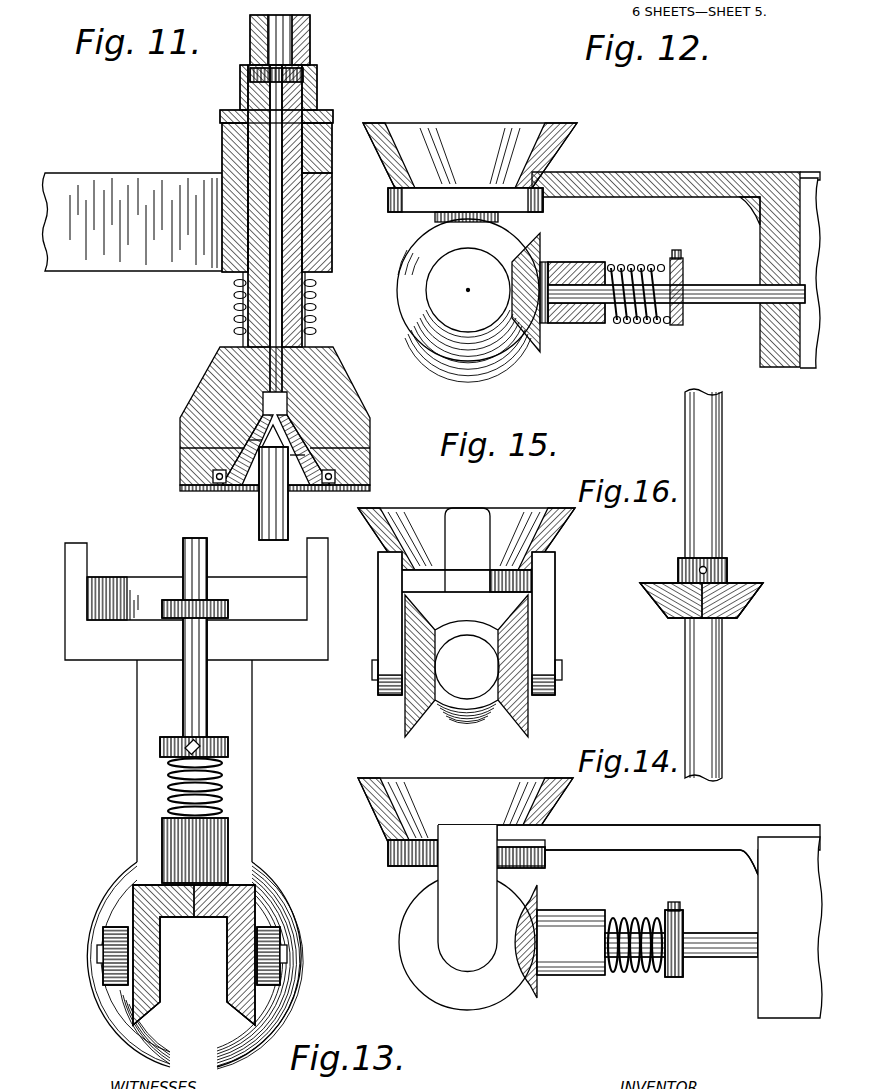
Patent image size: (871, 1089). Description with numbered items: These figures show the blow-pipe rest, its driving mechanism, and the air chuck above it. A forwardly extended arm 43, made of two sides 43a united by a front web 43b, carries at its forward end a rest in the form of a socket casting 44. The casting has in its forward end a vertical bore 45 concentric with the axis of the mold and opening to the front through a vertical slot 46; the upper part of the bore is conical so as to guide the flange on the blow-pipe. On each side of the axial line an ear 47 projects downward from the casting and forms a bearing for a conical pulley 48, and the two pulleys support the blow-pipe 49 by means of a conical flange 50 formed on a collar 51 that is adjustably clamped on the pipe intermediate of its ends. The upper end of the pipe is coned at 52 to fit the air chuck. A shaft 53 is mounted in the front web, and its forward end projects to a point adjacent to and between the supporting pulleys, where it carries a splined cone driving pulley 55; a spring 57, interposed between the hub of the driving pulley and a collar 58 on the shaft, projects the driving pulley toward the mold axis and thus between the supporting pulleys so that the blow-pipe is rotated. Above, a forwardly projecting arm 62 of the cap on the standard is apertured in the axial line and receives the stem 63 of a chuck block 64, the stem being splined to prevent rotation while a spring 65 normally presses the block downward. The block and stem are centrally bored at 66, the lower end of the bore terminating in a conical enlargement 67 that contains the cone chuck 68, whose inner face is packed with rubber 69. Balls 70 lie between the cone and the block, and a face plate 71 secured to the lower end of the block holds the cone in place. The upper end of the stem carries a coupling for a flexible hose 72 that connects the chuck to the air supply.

In FIG. 12, the forwardly extended arm 43 is at (808, 185).
In FIG. 14, the forwardly extended arm 43 is at (790, 850).
In FIG. 13, the forwardly extended arm 43 is at (117, 592).
In FIG. 12, the sides of the arm 43a is at (796, 330).
In FIG. 15, the sides of the arm 43a is at (355, 580).
In FIG. 13, the sides of the arm 43a is at (70, 578).
In FIG. 12, the front web 43b is at (790, 364).
In FIG. 13, the front web 43b is at (258, 632).
In FIG. 12, the socket casting 44 is at (566, 178).
In FIG. 15, the socket casting 44 is at (518, 512).
In FIG. 14, the socket casting 44 is at (562, 825).
In FIG. 13, the socket casting 44 is at (262, 862).
In FIG. 12, the vertical bore 45 is at (532, 136).
In FIG. 15, the vertical bore 45 is at (462, 574).
In FIG. 13, the vertical bore 45 is at (225, 1018).
In FIG. 12, the vertical slot 46 is at (388, 190).
In FIG. 15, the vertical slot 46 is at (450, 512).
In FIG. 14, the vertical slot 46 is at (466, 854).
In FIG. 13, the vertical slot 46 is at (193, 1050).
In FIG. 12, the ear 47 is at (500, 218).
In FIG. 15, the ear 47 is at (388, 620).
In FIG. 14, the ear 47 is at (445, 886).
In FIG. 13, the ear 47 is at (105, 980).
In FIG. 12, the conical pulley 48 is at (463, 332).
In FIG. 15, the conical pulley 48 is at (408, 708).
In FIG. 14, the conical pulley 48 is at (444, 1004).
In FIG. 13, the conical pulley 48 is at (235, 945).
In FIG. 11, the blow-pipe 49 is at (262, 520).
In FIG. 16, the blow-pipe 49 is at (722, 433).
In FIG. 16, the conical flange 50 is at (760, 590).
In FIG. 16, the collar 51 is at (728, 571).
In FIG. 11, the coned upper end 52 is at (298, 446).
In FIG. 12, the shaft 53 is at (712, 290).
In FIG. 14, the shaft 53 is at (714, 936).
In FIG. 13, the shaft 53 is at (208, 560).
In FIG. 12, the cone driving pulley 55 is at (525, 338).
In FIG. 15, the cone driving pulley 55 is at (466, 722).
In FIG. 14, the cone driving pulley 55 is at (540, 908).
In FIG. 13, the cone driving pulley 55 is at (205, 918).
In FIG. 12, the spring 57 is at (625, 326).
In FIG. 14, the spring 57 is at (622, 928).
In FIG. 13, the spring 57 is at (224, 790).
In FIG. 12, the collar 58 is at (676, 327).
In FIG. 14, the collar 58 is at (680, 915).
In FIG. 13, the collar 58 is at (228, 746).
In FIG. 11, the forwardly projecting arm 62 is at (91, 272).
In FIG. 11, the stem 63 is at (245, 264).
In FIG. 11, the chuck block 64 is at (358, 432).
In FIG. 11, the spring 65 is at (317, 319).
In FIG. 11, the central bore 66 is at (262, 146).
In FIG. 11, the conical enlargement 67 is at (238, 450).
In FIG. 11, the cone chuck 68 is at (318, 462).
In FIG. 11, the rubber packing 69 is at (317, 485).
In FIG. 11, the balls 70 is at (222, 484).
In FIG. 11, the face plate 71 is at (195, 490).
In FIG. 11, the flexible hose 72 is at (311, 30).